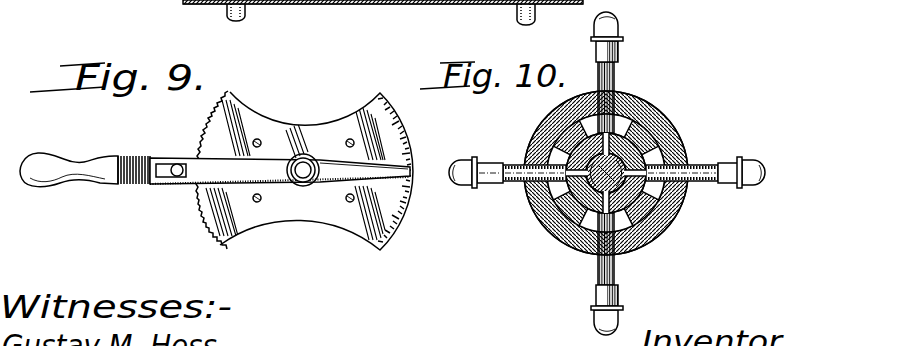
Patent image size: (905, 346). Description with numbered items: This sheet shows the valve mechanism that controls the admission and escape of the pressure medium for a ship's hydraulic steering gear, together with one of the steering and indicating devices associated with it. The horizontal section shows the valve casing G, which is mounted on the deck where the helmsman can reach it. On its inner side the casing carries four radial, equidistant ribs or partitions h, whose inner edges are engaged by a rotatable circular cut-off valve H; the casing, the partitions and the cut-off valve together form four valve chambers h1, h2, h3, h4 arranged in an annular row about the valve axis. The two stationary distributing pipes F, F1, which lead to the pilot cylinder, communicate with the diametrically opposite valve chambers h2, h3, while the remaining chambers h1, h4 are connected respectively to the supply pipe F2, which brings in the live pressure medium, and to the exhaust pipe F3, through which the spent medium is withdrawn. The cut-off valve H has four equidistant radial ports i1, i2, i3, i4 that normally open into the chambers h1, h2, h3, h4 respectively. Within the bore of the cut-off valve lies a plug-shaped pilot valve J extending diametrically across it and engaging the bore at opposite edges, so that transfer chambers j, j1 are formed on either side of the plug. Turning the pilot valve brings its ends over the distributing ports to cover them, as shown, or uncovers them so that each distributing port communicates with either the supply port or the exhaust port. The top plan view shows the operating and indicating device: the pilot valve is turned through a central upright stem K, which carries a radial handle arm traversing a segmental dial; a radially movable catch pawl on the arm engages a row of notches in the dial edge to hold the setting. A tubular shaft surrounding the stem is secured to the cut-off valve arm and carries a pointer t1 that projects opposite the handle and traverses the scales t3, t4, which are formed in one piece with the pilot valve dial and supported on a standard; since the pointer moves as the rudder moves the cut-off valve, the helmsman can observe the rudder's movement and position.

In FIG. 9, the distributing pipe F1 is at (55, 145).
In FIG. 10, the distributing pipe F1 is at (621, 29).
In FIG. 10, the distributing pipe F is at (619, 320).
In FIG. 10, the supply pipe F2 is at (452, 186).
In FIG. 10, the exhaust pipe F3 is at (755, 190).
In FIG. 9, the pointer t1 is at (240, 118).
In FIG. 9, the dial or scale t3 is at (177, 163).
In FIG. 9, the dial or scale t4 is at (212, 218).
In FIG. 9, the upright shaft or stem K is at (303, 178).
In FIG. 10, the valve casing G is at (643, 247).
In FIG. 10, the cut-off valve H is at (548, 222).
In FIG. 10, the pilot valve J is at (676, 211).
In FIG. 10, the ribs or partitions h is at (562, 128).
In FIG. 10, the valve chamber h1 is at (552, 158).
In FIG. 10, the valve chamber h2 is at (588, 224).
In FIG. 10, the valve chamber h3 is at (630, 120).
In FIG. 10, the valve chamber h4 is at (664, 144).
In FIG. 10, the radial port i1 is at (558, 173).
In FIG. 10, the radial port i2 is at (606, 220).
In FIG. 10, the radial port i3 is at (606, 126).
In FIG. 10, the radial port i4 is at (653, 173).
In FIG. 10, the transfer chamber j is at (583, 97).
In FIG. 10, the transfer chamber j1 is at (655, 151).